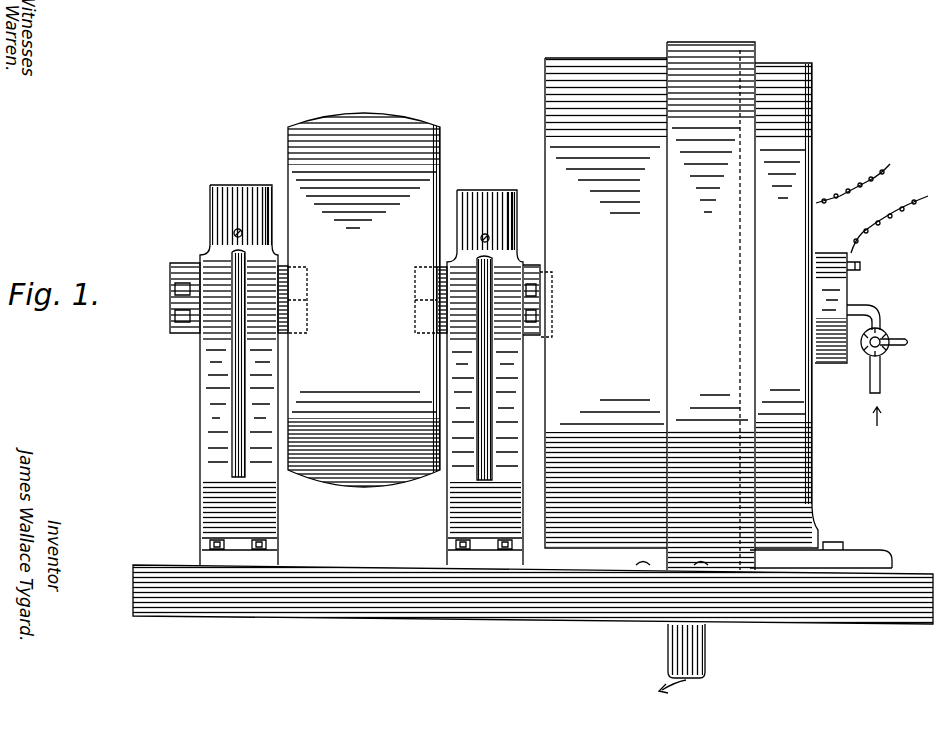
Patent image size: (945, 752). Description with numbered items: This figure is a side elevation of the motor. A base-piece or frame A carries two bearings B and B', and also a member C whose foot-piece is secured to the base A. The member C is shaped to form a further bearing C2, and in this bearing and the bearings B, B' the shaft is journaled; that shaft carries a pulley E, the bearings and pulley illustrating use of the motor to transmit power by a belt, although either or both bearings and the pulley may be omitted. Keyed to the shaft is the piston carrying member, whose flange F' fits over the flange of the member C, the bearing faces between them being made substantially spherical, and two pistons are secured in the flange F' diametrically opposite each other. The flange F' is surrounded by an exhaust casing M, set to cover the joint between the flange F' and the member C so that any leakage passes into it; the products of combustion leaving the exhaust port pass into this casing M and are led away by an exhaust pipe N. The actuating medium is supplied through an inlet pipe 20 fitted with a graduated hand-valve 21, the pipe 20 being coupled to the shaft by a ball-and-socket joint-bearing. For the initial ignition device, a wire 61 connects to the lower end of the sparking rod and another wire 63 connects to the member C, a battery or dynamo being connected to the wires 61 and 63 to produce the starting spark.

The base-piece A is at (406, 622).
The bearing B is at (223, 375).
The bearing B' is at (472, 377).
The pulley E is at (372, 115).
The flange F' is at (583, 303).
The exhaust casing M is at (706, 42).
The member C is at (812, 92).
The bearing C2 is at (838, 365).
The graduated hand-valve 21 is at (906, 343).
The inlet pipe 20 is at (881, 378).
The wire 61 is at (856, 178).
The wire 63 is at (889, 224).
The exhaust pipe N is at (706, 650).